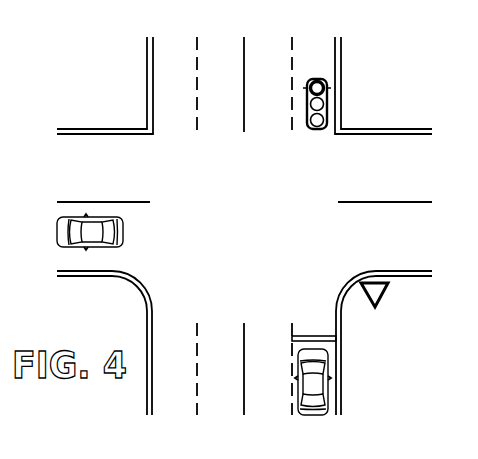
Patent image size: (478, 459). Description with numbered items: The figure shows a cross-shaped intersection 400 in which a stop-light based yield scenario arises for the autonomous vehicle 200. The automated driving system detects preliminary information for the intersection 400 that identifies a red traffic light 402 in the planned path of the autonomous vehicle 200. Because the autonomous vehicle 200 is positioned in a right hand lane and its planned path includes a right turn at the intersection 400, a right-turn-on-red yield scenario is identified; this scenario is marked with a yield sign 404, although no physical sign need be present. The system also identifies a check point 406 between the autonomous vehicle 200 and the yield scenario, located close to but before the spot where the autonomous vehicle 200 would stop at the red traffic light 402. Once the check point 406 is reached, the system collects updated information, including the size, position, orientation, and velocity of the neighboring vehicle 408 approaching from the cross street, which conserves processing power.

The cross-shaped intersection 400 is at (373, 106).
The red traffic light 402 is at (317, 79).
The yield sign 404 is at (386, 290).
The check point 406 is at (309, 335).
The neighboring vehicle 408 is at (88, 217).
The autonomous vehicle 200 is at (329, 393).